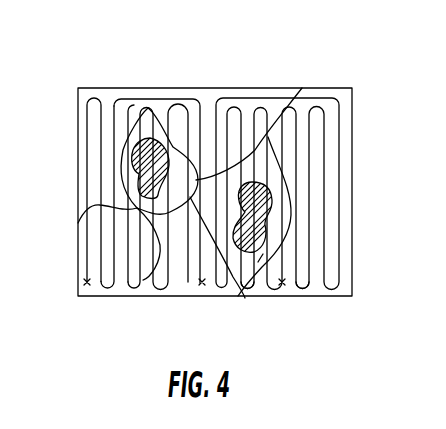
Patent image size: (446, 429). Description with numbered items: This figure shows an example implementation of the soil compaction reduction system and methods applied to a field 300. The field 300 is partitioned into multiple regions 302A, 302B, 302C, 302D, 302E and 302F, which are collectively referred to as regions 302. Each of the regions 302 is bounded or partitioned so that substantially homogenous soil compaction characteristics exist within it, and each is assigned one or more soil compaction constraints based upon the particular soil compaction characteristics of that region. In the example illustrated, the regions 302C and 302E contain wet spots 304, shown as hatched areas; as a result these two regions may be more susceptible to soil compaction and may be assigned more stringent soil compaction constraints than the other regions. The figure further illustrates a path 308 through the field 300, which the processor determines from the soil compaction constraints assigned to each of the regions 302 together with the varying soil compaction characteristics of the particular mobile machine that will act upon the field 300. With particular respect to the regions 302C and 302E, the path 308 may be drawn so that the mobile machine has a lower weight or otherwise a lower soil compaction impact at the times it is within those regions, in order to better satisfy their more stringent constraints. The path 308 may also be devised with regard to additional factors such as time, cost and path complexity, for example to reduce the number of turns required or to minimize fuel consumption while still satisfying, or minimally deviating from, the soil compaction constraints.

The field 300 is at (128, 296).
The regions 302 is at (172, 147).
The region 302A is at (110, 293).
The region 302B is at (88, 92).
The region 302C is at (175, 145).
The region 302D is at (230, 93).
The region 302E is at (245, 297).
The region 302F is at (307, 297).
The wet spots 304 is at (270, 240).
The path 308 is at (87, 255).